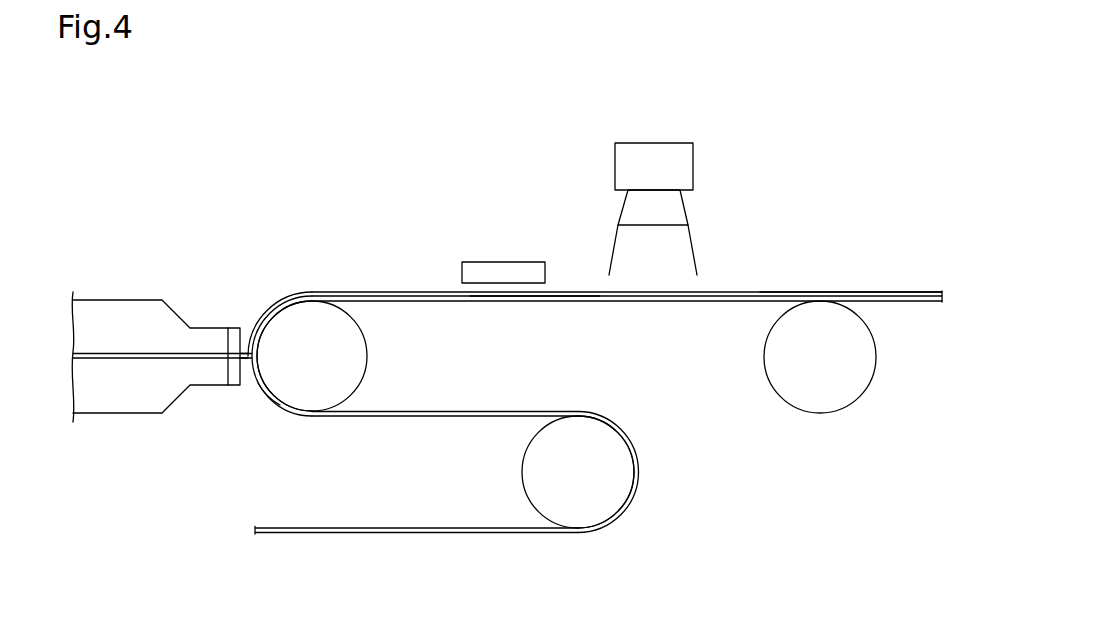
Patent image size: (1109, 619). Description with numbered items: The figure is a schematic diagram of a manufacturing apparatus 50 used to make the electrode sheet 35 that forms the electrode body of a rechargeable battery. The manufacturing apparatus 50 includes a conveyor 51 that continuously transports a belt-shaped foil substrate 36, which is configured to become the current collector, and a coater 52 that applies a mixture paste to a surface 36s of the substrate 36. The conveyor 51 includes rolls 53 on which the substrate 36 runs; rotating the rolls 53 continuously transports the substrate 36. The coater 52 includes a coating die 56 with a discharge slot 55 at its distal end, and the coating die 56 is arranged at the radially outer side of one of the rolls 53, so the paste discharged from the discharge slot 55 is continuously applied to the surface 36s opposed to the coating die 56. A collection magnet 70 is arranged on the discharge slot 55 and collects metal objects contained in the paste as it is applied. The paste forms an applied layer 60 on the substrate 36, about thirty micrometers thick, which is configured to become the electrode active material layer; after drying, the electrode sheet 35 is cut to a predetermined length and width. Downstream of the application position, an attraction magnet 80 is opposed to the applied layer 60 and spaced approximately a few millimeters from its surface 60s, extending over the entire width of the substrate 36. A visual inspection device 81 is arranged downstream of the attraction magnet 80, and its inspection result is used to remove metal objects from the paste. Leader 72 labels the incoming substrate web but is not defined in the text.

The manufacturing apparatus 50 is at (170, 108).
The conveyor 51 is at (801, 547).
The coater 52 is at (74, 470).
The rolls 53 is at (368, 355).
The discharge slot 55 is at (230, 358).
The coating die 56 is at (120, 298).
The applied layer 60 is at (380, 292).
The surface of the applied layer 60s is at (577, 291).
The substrate 36 is at (655, 302).
The surface of the substrate 36s is at (258, 383).
The electrode sheet 35 is at (775, 265).
The collection magnet 70 is at (236, 345).
The web material 72 is at (108, 352).
The attraction magnet 80 is at (507, 257).
The visual inspection device 81 is at (695, 143).